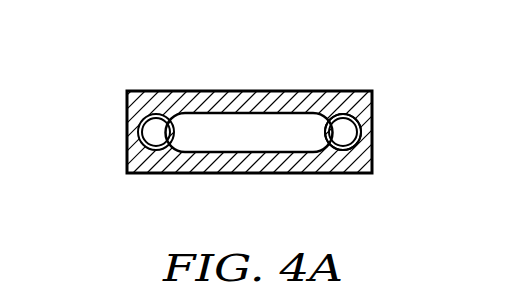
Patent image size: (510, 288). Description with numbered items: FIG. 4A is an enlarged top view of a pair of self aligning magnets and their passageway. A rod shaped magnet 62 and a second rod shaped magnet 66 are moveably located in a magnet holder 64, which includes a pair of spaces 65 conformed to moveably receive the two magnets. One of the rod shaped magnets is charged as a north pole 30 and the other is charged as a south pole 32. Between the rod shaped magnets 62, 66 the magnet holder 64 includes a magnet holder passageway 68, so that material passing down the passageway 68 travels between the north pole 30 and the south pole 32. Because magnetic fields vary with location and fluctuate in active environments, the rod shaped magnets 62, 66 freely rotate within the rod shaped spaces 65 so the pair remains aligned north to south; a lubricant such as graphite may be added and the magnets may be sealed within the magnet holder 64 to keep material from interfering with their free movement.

The south pole 32 is at (147, 108).
The rod shaped magnet 66 is at (170, 119).
The magnet holder passageway 68 is at (240, 120).
The magnet holder 64 is at (340, 113).
The rod shaped magnet 62 is at (362, 131).
The spaces 65 is at (133, 128).
The north pole 30 is at (330, 150).